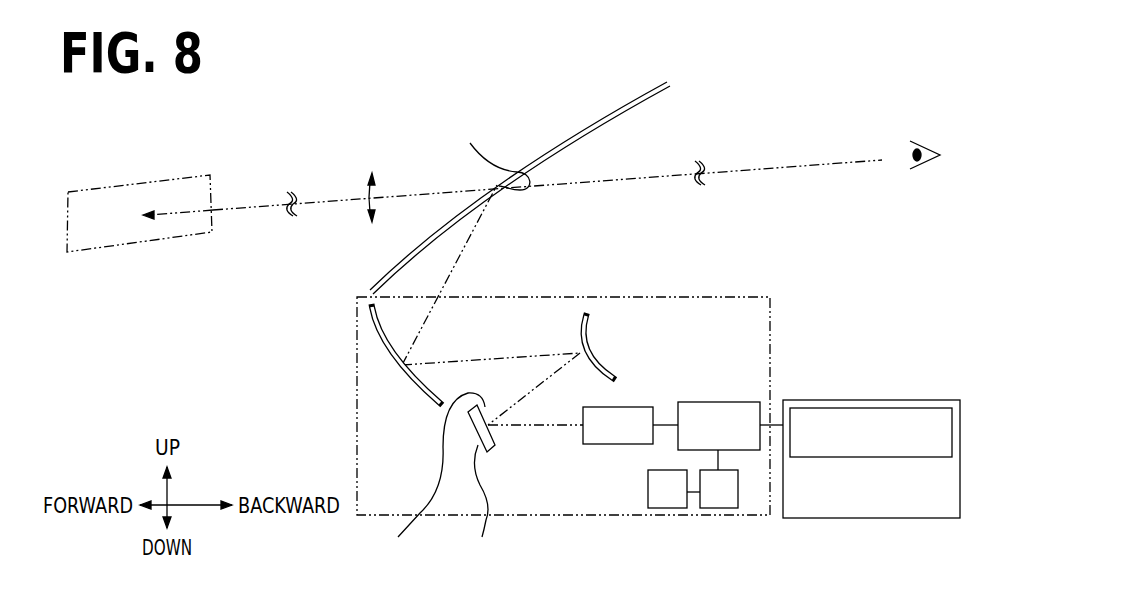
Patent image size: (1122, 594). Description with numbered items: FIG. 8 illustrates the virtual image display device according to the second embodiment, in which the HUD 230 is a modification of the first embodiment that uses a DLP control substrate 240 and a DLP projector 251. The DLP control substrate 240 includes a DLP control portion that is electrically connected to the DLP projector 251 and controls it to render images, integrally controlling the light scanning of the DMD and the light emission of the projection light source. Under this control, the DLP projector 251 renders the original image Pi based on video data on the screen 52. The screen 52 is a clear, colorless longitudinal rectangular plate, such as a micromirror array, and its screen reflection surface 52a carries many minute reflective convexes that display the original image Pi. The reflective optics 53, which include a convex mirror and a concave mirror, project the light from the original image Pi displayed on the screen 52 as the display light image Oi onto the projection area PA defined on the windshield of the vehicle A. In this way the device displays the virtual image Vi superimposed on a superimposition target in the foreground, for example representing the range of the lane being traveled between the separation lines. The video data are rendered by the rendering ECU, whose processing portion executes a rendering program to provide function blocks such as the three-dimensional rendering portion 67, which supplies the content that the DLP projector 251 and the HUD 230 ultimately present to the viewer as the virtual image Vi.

The vehicle A is at (634, 78).
The projection area PA is at (487, 152).
The display light image Oi is at (505, 195).
The virtual image Vi is at (95, 252).
The reflective optics 53 is at (377, 336).
The HUD 230 is at (759, 337).
The 3D rendering portion 67 is at (905, 408).
The screen reflection surface 52a is at (420, 487).
The screen 52 is at (446, 481).
The DLP projector 251 is at (600, 445).
The DLP control substrate 240 is at (750, 450).